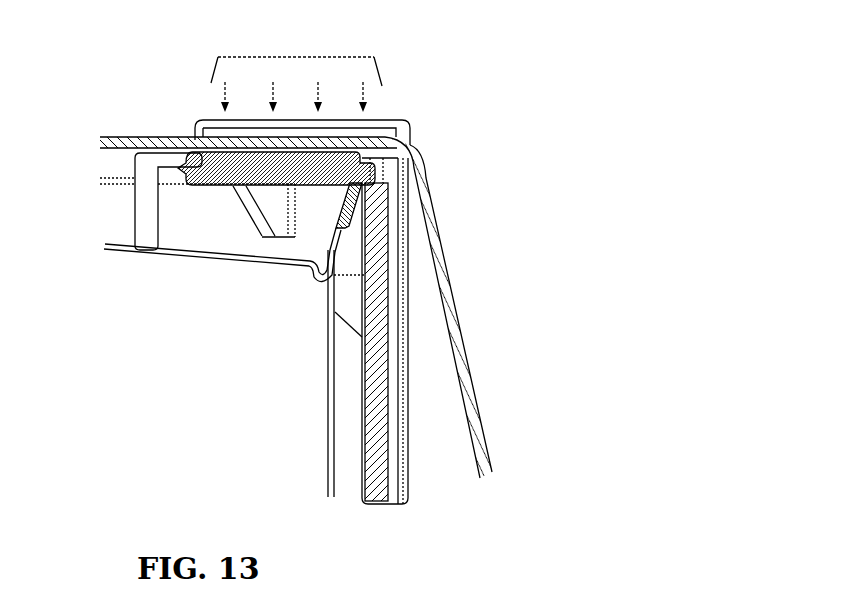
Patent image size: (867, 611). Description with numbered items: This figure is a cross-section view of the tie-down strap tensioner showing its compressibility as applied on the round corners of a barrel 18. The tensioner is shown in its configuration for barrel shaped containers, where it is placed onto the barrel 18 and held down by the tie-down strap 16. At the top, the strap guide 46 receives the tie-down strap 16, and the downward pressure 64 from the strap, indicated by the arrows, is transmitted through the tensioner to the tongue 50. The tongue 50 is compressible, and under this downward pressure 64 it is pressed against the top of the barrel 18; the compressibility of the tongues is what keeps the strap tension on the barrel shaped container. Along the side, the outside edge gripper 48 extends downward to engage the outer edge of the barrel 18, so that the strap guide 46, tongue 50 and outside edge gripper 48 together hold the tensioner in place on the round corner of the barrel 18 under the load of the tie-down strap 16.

The tie-down strap 16 is at (447, 290).
The barrel 18 is at (240, 263).
The strap guide 46 is at (390, 132).
The outside edge gripper 48 is at (355, 297).
The tongue 50 is at (143, 218).
The downward pressure 64 is at (281, 47).